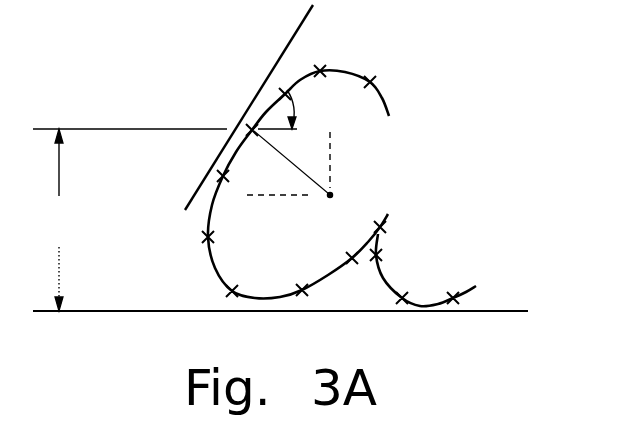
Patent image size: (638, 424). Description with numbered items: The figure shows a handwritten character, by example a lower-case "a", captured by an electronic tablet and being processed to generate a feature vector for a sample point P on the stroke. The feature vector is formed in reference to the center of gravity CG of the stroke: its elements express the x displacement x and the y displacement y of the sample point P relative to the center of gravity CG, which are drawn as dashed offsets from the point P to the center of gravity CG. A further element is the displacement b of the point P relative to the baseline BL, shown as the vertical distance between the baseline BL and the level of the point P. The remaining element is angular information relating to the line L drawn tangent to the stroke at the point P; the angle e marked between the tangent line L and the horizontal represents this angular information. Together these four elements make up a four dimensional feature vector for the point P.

The line tangent to P L is at (300, 26).
The sample point P is at (244, 117).
The angle between tangent and horizontal e is at (299, 109).
The center of gravity CG is at (300, 178).
The x displacement x is at (285, 206).
The y displacement y is at (353, 150).
The displacement relative to baseline b is at (58, 220).
The baseline BL is at (280, 296).